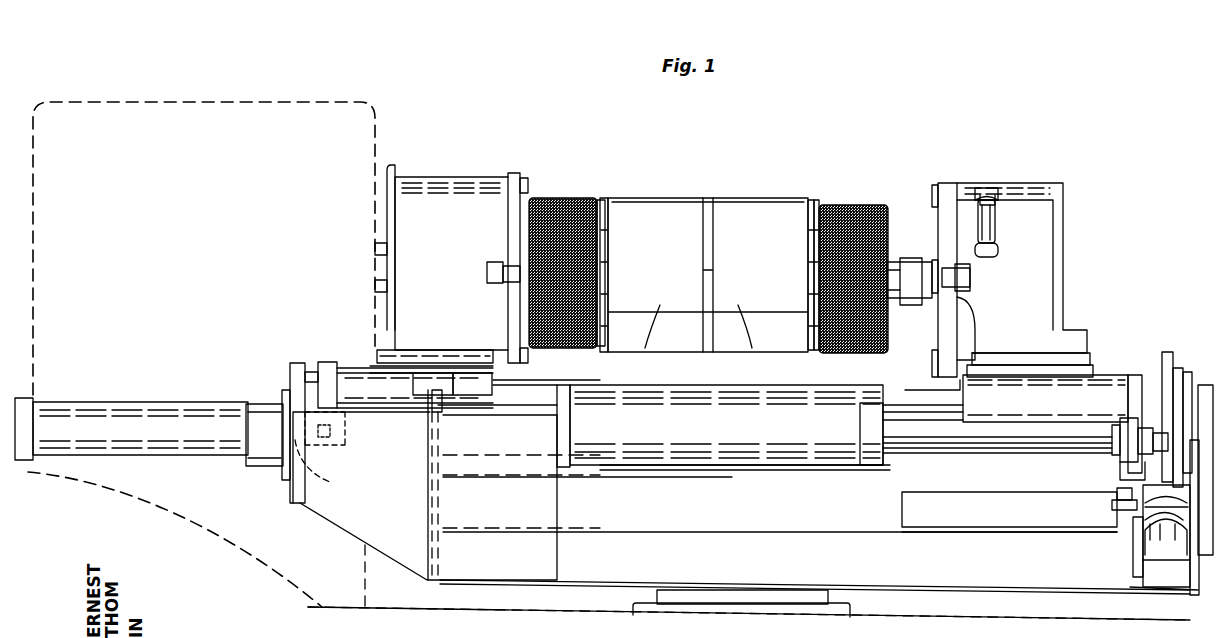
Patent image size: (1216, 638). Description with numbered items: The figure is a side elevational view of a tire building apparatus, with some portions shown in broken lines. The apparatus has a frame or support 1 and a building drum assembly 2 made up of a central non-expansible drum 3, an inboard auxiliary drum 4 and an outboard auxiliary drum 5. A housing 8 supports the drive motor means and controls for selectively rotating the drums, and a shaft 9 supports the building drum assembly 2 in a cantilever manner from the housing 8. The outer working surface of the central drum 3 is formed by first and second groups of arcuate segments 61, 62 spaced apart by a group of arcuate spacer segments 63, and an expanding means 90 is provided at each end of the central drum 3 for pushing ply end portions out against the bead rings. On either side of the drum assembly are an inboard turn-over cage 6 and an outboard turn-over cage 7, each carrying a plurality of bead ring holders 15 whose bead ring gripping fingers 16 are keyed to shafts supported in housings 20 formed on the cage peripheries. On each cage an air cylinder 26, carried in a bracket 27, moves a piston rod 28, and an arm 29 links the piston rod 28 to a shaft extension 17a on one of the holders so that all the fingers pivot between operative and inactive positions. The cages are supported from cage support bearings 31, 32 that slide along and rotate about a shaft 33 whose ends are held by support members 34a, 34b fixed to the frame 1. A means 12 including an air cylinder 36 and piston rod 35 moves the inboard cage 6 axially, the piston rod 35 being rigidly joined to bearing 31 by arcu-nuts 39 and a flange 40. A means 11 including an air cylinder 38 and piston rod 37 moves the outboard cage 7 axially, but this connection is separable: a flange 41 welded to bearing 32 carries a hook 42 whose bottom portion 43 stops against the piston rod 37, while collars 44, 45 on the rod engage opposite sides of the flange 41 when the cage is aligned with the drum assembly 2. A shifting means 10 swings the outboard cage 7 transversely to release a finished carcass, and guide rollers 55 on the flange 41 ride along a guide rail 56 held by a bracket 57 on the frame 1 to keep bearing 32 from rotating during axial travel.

The frame 1 is at (498, 590).
The building drum assembly 2 is at (655, 168).
The central non-expansible drum 3 is at (712, 193).
The inboard auxiliary drum 4 is at (573, 200).
The outboard auxiliary drum 5 is at (852, 203).
The inboard turn-over cage 6 is at (445, 178).
The outboard turn-over cage 7 is at (1028, 188).
The housing 8 is at (243, 100).
The shaft 9 is at (377, 243).
The shifting means 10 is at (1128, 557).
The axial moving means for outboard cage 11 is at (745, 462).
The axial moving means for inboard cage 12 is at (160, 462).
The bead ring holder 15 is at (930, 187).
The bead ring gripping finger 16 is at (933, 203).
The shaft extension 17a is at (977, 190).
The housing 20 is at (958, 187).
The air cylinder 26 is at (993, 252).
The bracket 27 is at (1000, 225).
The piston rod 28 is at (992, 198).
The arm 29 is at (988, 195).
The cage support bearing 31 is at (357, 360).
The cage support bearing 32 is at (1105, 378).
The shaft 33 is at (313, 360).
The support member 34a is at (297, 373).
The support member 34b is at (1206, 388).
The piston rod 35 is at (300, 465).
The air cylinder 36 is at (155, 405).
The piston rod 37 is at (945, 440).
The air cylinder 38 is at (822, 458).
The arcu-nuts 39 is at (335, 450).
The flange 40 is at (330, 388).
The flange 41 is at (1145, 380).
The hook 42 is at (1133, 425).
The bottom portion of hook 43 is at (1132, 465).
The collar 44 is at (1108, 427).
The collar 45 is at (1150, 434).
The guide roller 55 is at (1120, 498).
The guide rail 56 is at (948, 502).
The bracket 57 is at (1020, 494).
The first group of arcuate segments 61 is at (754, 340).
The second group of arcuate segments 62 is at (655, 340).
The arcuate spacer segments 63 is at (712, 286).
The expanding means 90 is at (607, 200).